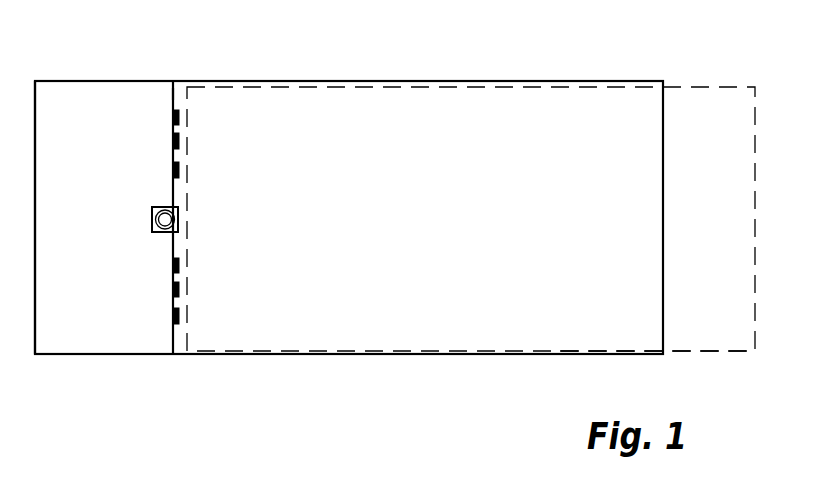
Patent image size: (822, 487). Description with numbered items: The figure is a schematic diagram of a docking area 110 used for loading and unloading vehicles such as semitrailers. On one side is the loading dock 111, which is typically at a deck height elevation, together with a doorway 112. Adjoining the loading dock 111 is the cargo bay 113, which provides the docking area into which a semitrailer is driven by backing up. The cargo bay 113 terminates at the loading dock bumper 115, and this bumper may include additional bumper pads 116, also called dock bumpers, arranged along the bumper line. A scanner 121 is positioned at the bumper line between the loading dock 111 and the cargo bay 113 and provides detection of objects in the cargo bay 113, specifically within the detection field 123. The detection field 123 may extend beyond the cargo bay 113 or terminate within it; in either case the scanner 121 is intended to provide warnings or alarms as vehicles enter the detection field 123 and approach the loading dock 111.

The docking area 110 is at (341, 56).
The loading dock 111 is at (126, 192).
The doorway 112 is at (37, 264).
The cargo bay 113 is at (472, 81).
The loading dock bumper 115 is at (175, 94).
The bumper pads 116 is at (179, 113).
The scanner 121 is at (180, 210).
The detection field 123 is at (713, 351).